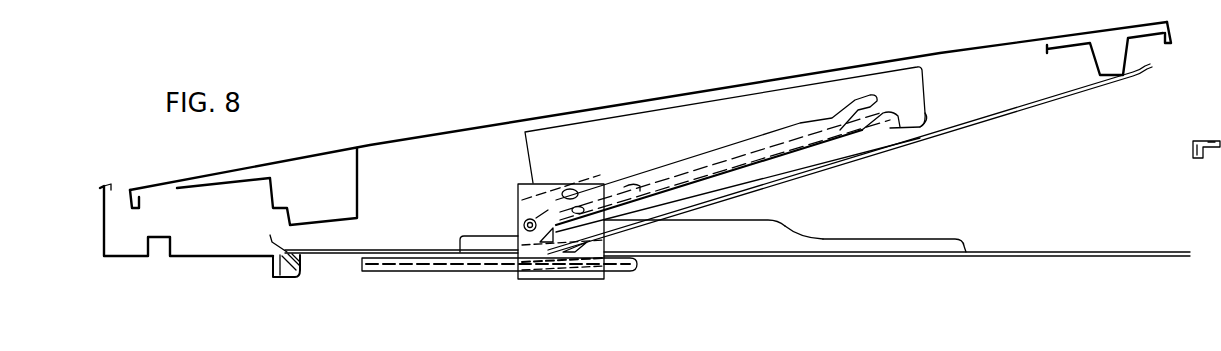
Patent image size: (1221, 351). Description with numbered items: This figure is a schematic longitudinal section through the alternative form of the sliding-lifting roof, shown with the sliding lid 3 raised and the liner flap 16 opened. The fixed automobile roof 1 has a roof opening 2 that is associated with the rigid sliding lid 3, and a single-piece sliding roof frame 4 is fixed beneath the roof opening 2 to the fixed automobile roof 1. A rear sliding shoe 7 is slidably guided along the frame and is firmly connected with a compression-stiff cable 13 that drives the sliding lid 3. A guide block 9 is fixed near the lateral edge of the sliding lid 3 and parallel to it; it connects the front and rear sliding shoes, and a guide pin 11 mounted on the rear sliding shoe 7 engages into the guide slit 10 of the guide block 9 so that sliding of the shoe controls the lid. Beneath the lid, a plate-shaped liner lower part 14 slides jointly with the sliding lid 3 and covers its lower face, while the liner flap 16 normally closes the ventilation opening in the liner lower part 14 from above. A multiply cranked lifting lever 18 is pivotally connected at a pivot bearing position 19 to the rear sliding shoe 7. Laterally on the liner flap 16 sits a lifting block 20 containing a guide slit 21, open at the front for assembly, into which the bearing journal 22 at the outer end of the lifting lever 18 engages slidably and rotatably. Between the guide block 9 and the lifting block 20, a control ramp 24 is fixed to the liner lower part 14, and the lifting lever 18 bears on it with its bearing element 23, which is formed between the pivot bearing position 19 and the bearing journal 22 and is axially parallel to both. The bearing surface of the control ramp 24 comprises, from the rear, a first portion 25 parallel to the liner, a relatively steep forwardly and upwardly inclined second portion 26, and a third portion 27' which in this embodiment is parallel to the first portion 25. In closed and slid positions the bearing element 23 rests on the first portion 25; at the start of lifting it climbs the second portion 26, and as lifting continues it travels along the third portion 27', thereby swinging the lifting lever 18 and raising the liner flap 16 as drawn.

The fixed automobile roof 1 is at (1210, 140).
The roof opening 2 is at (1148, 145).
The sliding lid 3 is at (478, 128).
The sliding roof frame 4 is at (212, 258).
The rear sliding shoe 7 is at (575, 280).
The guide block 9 is at (530, 158).
The guide slit 10 is at (698, 160).
The guide pin 11 is at (576, 191).
The cable 13 is at (405, 266).
The liner lower part 14 is at (318, 255).
The liner flap 16 is at (982, 127).
The lifting lever 18 is at (541, 214).
The pivot bearing position 19 is at (520, 222).
The lifting block 20 is at (888, 142).
The guide slit 21 is at (926, 123).
The bearing journal 22 is at (633, 184).
The bearing element 23 is at (598, 204).
The control ramp 24 is at (705, 253).
The first portion 25 is at (895, 239).
The second portion 26 is at (795, 232).
The third portion 27' is at (710, 206).